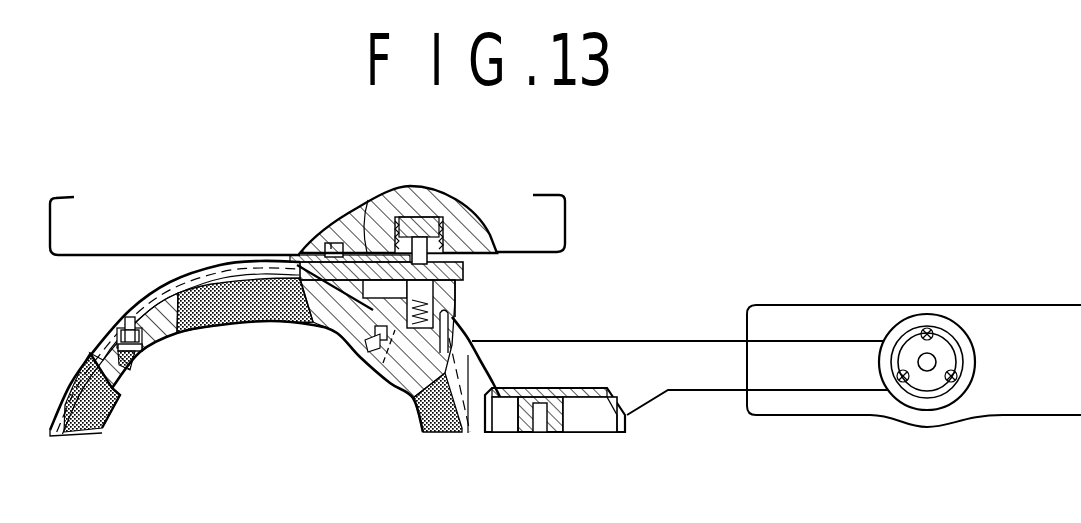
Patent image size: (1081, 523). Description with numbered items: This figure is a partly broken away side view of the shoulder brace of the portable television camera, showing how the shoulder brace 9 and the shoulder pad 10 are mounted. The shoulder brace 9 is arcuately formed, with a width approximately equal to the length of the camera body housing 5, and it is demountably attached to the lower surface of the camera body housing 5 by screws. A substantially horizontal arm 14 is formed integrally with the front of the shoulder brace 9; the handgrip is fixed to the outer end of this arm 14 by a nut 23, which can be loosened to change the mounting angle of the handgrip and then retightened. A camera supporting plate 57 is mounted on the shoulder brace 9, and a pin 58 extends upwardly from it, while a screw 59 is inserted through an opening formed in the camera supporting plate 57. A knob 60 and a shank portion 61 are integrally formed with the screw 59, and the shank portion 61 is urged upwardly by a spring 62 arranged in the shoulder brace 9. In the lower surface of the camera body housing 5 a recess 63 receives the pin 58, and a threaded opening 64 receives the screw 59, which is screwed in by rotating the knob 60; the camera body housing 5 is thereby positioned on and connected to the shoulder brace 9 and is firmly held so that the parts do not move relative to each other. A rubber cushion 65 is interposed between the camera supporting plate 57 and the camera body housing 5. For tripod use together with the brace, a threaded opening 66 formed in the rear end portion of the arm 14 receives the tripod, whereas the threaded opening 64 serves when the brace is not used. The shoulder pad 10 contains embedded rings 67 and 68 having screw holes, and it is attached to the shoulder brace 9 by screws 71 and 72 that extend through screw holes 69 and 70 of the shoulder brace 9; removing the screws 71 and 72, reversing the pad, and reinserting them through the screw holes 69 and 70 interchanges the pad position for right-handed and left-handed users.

The camera body housing 5 is at (566, 235).
The shoulder brace 9 is at (73, 375).
The shoulder pad 10 is at (85, 422).
The arm 14 is at (641, 352).
The nut 23 is at (930, 331).
The camera supporting plate 57 is at (460, 247).
The pin 58 is at (340, 233).
The screw 59 is at (403, 217).
The knob 60 is at (465, 272).
The shank portion 61 is at (423, 278).
The spring 62 is at (430, 313).
The recess 63 is at (307, 243).
The threaded opening 64 is at (422, 234).
The rubber cushion 65 is at (367, 225).
The threaded opening 66 is at (534, 430).
The ring 67 is at (143, 338).
The ring 68 is at (385, 342).
The screw hole 69 is at (123, 333).
The screw hole 70 is at (362, 335).
The screw 71 is at (128, 360).
The screw 72 is at (403, 345).